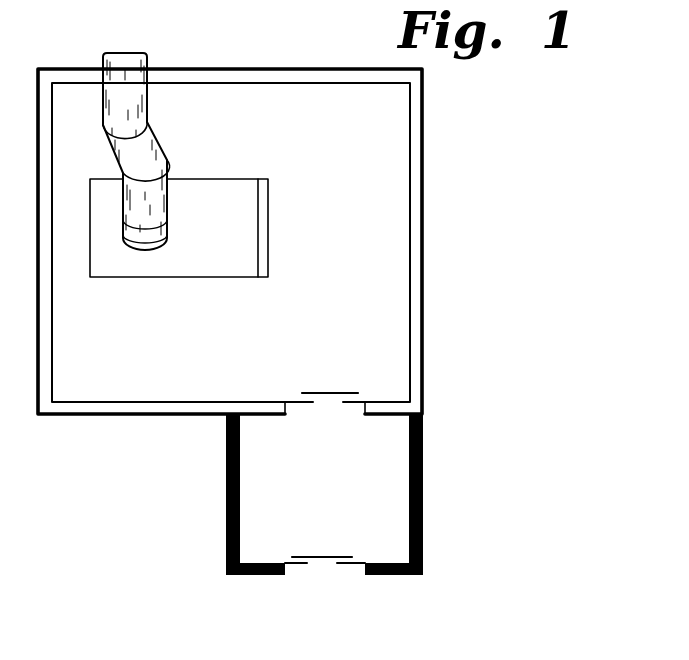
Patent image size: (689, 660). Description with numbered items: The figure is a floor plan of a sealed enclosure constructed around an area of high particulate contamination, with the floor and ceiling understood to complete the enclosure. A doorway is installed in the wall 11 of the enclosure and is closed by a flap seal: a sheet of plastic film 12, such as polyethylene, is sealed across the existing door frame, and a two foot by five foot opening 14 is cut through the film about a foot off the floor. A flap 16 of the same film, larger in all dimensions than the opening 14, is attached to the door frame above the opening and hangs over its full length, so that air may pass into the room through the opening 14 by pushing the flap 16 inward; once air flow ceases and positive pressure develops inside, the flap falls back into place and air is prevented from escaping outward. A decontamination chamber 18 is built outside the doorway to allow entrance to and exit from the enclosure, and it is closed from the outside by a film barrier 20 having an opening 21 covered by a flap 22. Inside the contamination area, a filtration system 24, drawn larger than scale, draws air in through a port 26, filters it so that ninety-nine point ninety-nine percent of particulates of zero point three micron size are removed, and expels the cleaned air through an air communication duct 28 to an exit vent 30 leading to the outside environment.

The wall 11 is at (159, 407).
The sheet of plastic film 12 is at (347, 405).
The opening 14 is at (328, 405).
The flap 16 is at (333, 392).
The decontamination chamber 18 is at (423, 463).
The film barrier 20 is at (297, 566).
The opening 21 is at (320, 566).
The flap 22 is at (330, 566).
The filtration system 24 is at (208, 192).
The port 26 is at (268, 235).
The air communication duct 28 is at (148, 162).
The exit vent 30 is at (137, 52).